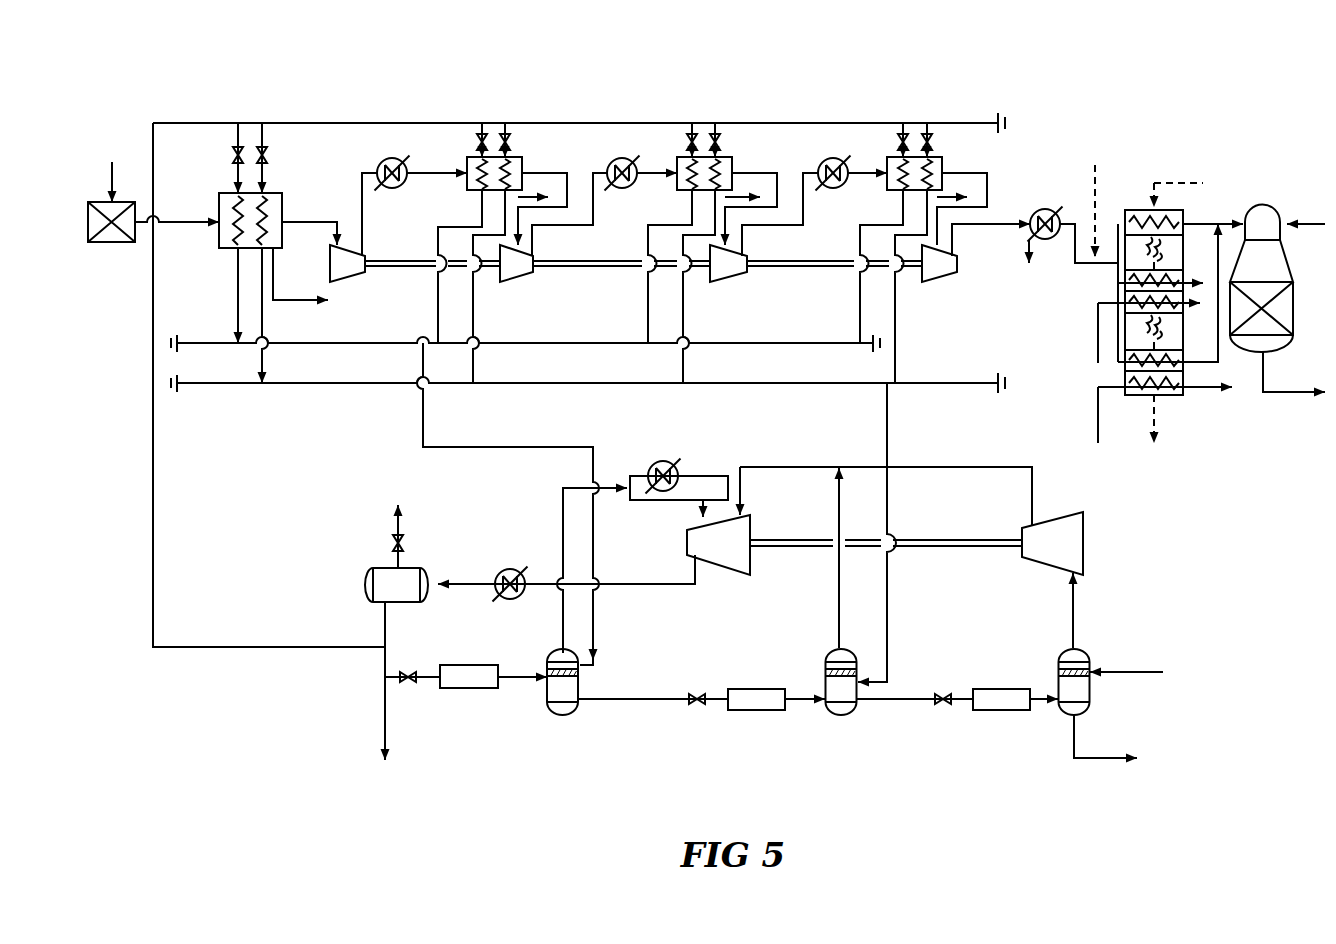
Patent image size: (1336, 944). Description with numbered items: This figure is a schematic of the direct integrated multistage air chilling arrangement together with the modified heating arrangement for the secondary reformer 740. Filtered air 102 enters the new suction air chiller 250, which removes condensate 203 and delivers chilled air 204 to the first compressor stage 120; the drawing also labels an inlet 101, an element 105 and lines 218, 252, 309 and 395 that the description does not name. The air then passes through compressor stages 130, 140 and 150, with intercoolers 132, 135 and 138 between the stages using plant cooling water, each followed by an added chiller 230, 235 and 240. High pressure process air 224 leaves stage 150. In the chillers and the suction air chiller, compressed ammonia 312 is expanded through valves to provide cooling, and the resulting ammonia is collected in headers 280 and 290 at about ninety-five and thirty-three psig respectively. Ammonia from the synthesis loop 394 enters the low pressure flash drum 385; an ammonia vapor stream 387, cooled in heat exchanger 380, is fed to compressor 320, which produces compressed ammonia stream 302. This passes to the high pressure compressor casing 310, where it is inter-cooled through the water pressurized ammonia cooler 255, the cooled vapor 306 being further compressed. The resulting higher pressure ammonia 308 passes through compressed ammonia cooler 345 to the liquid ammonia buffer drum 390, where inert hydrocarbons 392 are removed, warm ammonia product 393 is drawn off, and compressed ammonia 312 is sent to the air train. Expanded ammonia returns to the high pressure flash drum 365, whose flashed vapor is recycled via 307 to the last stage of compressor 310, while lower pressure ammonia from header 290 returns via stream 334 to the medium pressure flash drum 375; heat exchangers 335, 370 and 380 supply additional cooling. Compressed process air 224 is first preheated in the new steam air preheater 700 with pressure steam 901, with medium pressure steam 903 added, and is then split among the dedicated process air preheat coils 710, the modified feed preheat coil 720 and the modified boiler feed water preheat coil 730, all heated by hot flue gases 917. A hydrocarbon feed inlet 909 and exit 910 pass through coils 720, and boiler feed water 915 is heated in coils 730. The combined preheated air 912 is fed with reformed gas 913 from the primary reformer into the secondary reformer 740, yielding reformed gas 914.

The feed gas stream 101 is at (112, 166).
The filtered air 102 is at (187, 220).
The pretreatment unit 105 is at (117, 243).
The compressor stage 120 is at (347, 279).
The compressor stage 130 is at (520, 278).
The intercooler 132 is at (378, 158).
The intercooler 135 is at (611, 160).
The intercooler 138 is at (818, 160).
The compressor stage 140 is at (727, 278).
The compressor stage 150 is at (940, 280).
The condensate 203 is at (288, 298).
The chilled air 204 is at (296, 222).
The compressed gas stream 218 is at (807, 200).
The high pressure process air 224 is at (1003, 228).
The added chiller 230 is at (473, 150).
The added chiller 235 is at (684, 148).
The added chiller 240 is at (892, 148).
The suction air chiller 250 is at (284, 205).
The refrigerant supply stream 252 is at (237, 138).
The water pressurized ammonia cooler 255 is at (650, 463).
The header 280 is at (405, 340).
The header 290 is at (313, 385).
The compressed ammonia stream 302 is at (1000, 465).
The cooled ammonia vapor 306 is at (660, 500).
The flashed vapor recycle 307 is at (562, 540).
The higher pressure ammonia 308 is at (640, 584).
The cooled stream 309 is at (597, 628).
The compressor casing 310 is at (728, 575).
The compressed ammonia 312 is at (283, 647).
The compressor 320 is at (1033, 565).
The stream 334 is at (884, 443).
The heat exchanger 335 is at (466, 665).
The compressed ammonia cooler 345 is at (497, 572).
The high pressure flash drum 365 is at (555, 714).
The heat exchanger 370 is at (770, 710).
The medium pressure ammonia flash drum 375 is at (858, 712).
The heat exchanger 380 is at (1005, 710).
The low pressure flash drum 385 is at (1095, 700).
The ammonia vapor stream 387 is at (1075, 620).
The liquid ammonia buffer drum 390 is at (385, 568).
The inert hydrocarbons 392 is at (395, 525).
The warm ammonia product 393 is at (383, 692).
The ammonia from the ammonia synthesis loop 394 is at (1130, 672).
The liquid stream 395 is at (1074, 745).
The steam air preheater 700 is at (1038, 210).
The process air preheat coils 710 is at (1140, 210).
The feed preheat convection coil 720 is at (1167, 303).
The boiler feed water preheat convection coil 730 is at (1140, 392).
The secondary reformer 740 is at (1297, 292).
The pressure steam 901 is at (1060, 210).
The medium pressure steam 903 is at (1097, 178).
The hydrocarbon feed inlet 909 is at (1097, 322).
The hydrocarbon feed exit 910 is at (1188, 303).
The preheated air 912 is at (1213, 220).
The reformed gas from the primary reformer 913 is at (1312, 222).
The reformed gas 914 is at (1298, 393).
The boiler feed water 915 is at (1098, 424).
The hot flue gases 917 is at (1172, 183).